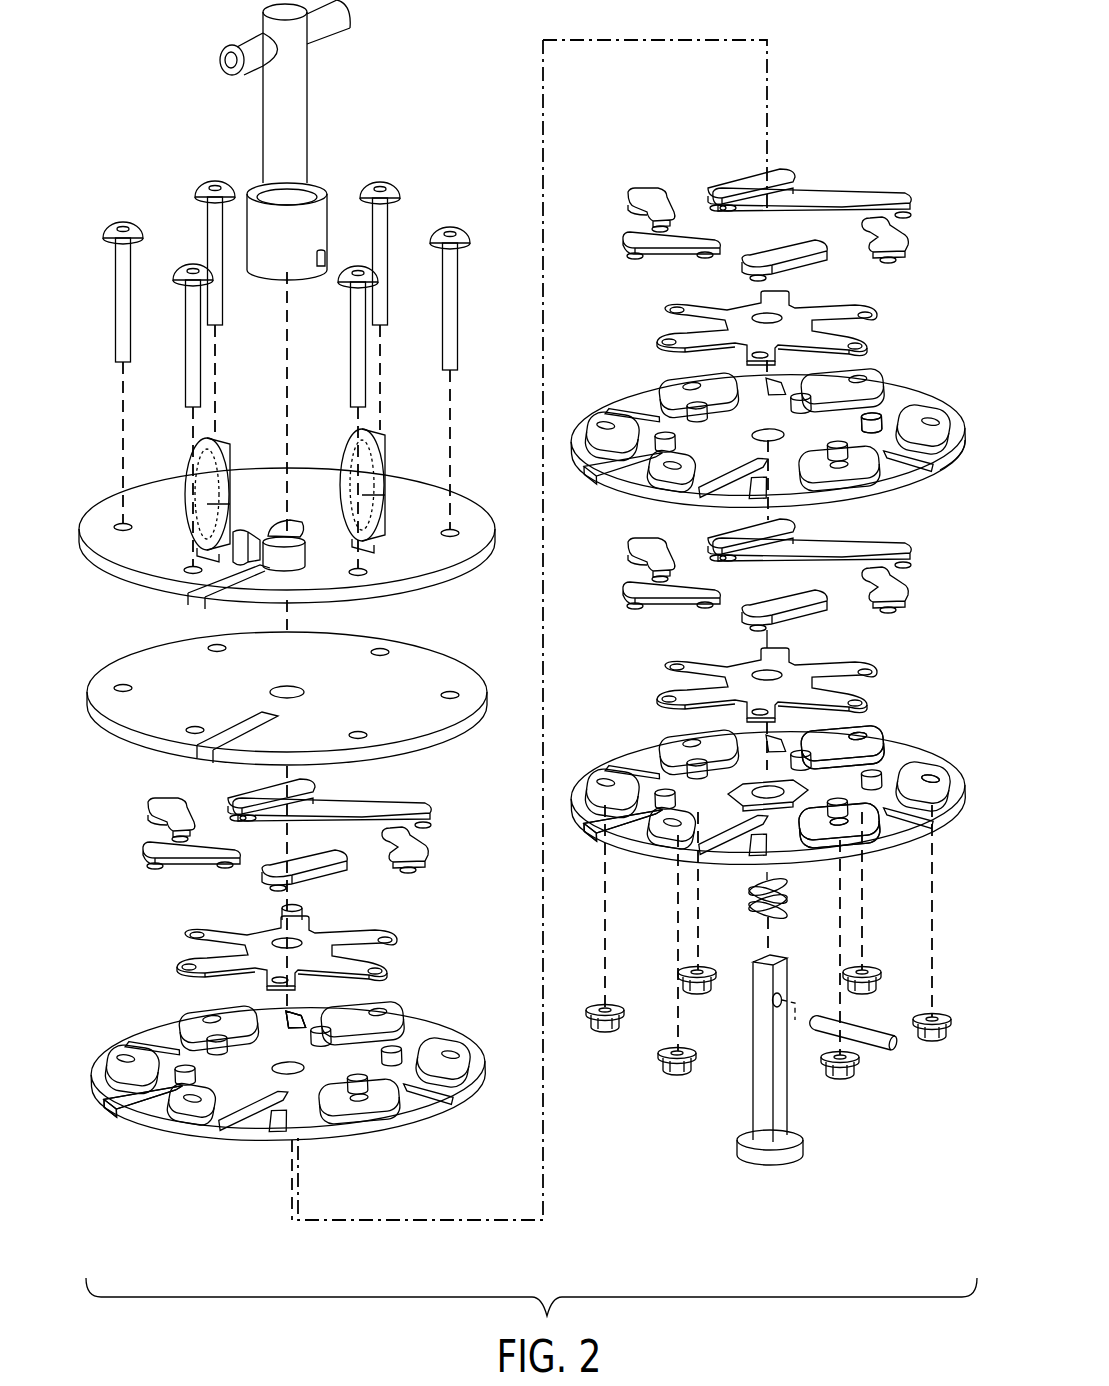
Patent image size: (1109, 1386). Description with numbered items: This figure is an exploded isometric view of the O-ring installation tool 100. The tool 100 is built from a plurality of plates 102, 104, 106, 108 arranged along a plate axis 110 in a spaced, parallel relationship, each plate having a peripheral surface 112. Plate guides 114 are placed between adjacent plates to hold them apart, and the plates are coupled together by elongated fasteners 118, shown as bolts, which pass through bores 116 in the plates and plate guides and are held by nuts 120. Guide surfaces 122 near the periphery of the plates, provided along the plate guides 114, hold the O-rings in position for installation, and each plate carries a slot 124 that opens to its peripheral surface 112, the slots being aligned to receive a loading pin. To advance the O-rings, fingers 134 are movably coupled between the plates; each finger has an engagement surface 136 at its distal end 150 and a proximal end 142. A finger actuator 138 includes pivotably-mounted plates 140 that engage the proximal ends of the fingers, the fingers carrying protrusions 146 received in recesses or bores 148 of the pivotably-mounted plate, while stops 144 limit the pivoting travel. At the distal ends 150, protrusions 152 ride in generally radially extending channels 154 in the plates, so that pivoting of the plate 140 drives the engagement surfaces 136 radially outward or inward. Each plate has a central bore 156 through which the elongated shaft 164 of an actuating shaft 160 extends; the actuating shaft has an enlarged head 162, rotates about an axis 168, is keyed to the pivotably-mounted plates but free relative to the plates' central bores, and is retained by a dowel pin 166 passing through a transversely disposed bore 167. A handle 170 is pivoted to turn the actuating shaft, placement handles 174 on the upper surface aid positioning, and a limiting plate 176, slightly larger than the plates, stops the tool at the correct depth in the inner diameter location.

The tool 100 is at (882, 72).
The plate 102 is at (289, 821).
The plate 104 is at (368, 1012).
The plate 106 is at (772, 442).
The plate 108 is at (776, 882).
The plate axis 110 is at (285, 1010).
The peripheral surface 112 is at (942, 475).
The plate guide 114 is at (876, 750).
The bore 116 is at (933, 780).
The elongated fastener 118 is at (458, 298).
The nut 120 is at (945, 1034).
The guide surface 122 is at (868, 832).
The slot 124 is at (197, 745).
The finger 134 is at (905, 565).
The engagement surface 136 is at (623, 599).
The finger actuator 138 is at (897, 688).
The pivotably-mounted plate 140 is at (868, 305).
The proximal end 142 is at (730, 606).
The stop 144 is at (875, 420).
The protrusion 146 is at (228, 870).
The recess or bore 148 is at (185, 950).
The distal end 150 is at (645, 546).
The protrusion 152 is at (413, 870).
The channel 154 is at (107, 1100).
The central bore 156 is at (300, 928).
The actuating shaft 160 is at (770, 1072).
The enlarged head 162 is at (800, 1155).
The elongated shaft 164 is at (777, 1048).
The dowel pin 166 is at (892, 1050).
The transversely disposed bore 167 is at (774, 1002).
The axis 168 is at (771, 925).
The handle 170 is at (308, 95).
The placement handle 174 is at (372, 452).
The limiting plate 176 is at (99, 573).